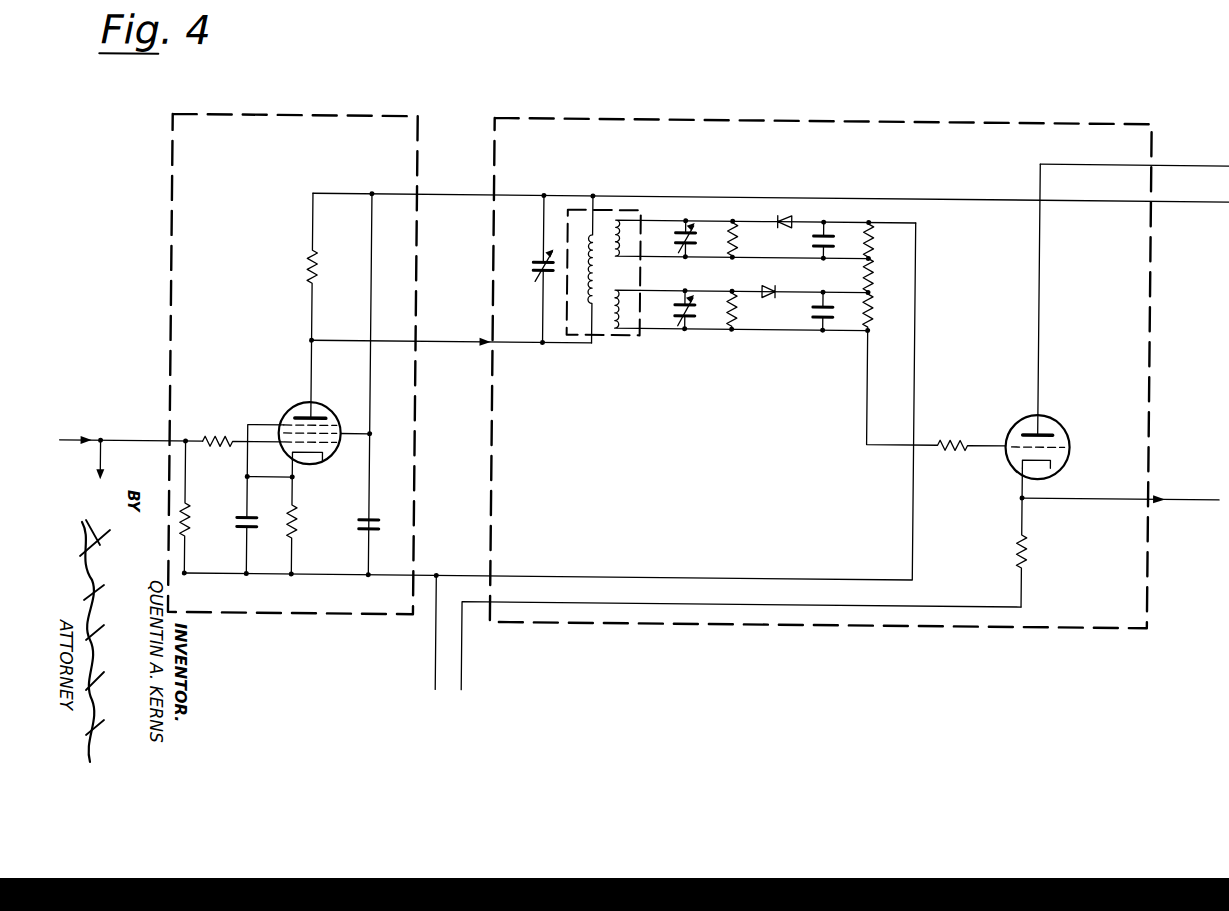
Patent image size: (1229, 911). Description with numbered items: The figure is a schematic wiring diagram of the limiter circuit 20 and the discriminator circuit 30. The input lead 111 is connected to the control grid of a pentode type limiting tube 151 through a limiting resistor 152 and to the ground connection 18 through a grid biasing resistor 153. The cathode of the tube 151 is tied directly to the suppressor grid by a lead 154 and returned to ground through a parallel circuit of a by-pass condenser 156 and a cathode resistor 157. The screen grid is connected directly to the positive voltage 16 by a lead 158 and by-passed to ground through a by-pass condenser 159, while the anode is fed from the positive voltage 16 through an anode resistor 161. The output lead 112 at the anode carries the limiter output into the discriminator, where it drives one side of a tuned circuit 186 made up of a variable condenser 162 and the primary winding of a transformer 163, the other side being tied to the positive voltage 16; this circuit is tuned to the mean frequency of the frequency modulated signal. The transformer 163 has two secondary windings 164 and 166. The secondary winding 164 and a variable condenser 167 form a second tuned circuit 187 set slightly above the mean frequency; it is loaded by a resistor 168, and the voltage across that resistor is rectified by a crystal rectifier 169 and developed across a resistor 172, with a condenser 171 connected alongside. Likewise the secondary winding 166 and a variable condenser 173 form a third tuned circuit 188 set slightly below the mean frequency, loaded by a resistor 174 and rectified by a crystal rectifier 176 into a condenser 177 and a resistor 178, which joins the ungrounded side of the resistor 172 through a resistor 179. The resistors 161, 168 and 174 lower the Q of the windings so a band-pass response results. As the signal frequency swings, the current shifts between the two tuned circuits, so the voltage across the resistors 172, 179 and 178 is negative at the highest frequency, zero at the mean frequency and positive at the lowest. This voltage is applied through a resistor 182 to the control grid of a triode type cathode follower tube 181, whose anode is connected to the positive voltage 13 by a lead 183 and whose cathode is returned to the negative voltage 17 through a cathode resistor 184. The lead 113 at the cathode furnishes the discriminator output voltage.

The limiter circuit 20 is at (381, 118).
The discriminator circuit 30 is at (883, 119).
The positive voltage 13 is at (1121, 163).
The positive voltage 16 is at (470, 196).
The negative voltage 17 is at (786, 602).
The ground connection 18 is at (463, 575).
The input lead 111 is at (149, 432).
The output lead 112 is at (469, 342).
The lead 113 is at (1208, 491).
The pentode type limiting tube 151 is at (357, 397).
The limiting resistor 152 is at (237, 425).
The grid biasing resistor 153 is at (194, 513).
The lead 154 is at (247, 467).
The by-pass condenser 156 is at (242, 533).
The cathode resistor 157 is at (303, 538).
The lead 158 is at (369, 303).
The by-pass condenser 159 is at (363, 520).
The anode resistor 161 is at (305, 273).
The variable condenser 162 is at (540, 262).
The transformer 163 is at (601, 316).
The secondary winding 164 is at (628, 234).
The secondary winding 166 is at (626, 310).
The variable condenser 167 is at (692, 232).
The resistor 168 is at (737, 246).
The crystal rectifier 169 is at (791, 216).
The condenser 171 is at (827, 246).
The resistor 172 is at (872, 247).
The variable condenser 173 is at (696, 322).
The resistor 174 is at (738, 311).
The crystal rectifier 176 is at (772, 284).
The condenser 177 is at (833, 320).
The resistor 178 is at (872, 312).
The resistor 179 is at (872, 279).
The triode type cathode follower tube 181 is at (1061, 421).
The resistor 182 is at (944, 440).
The lead 183 is at (1039, 290).
The cathode resistor 184 is at (1030, 557).
The tuned circuit 186 is at (581, 178).
The second tuned circuit 187 is at (652, 242).
The third tuned circuit 188 is at (653, 314).